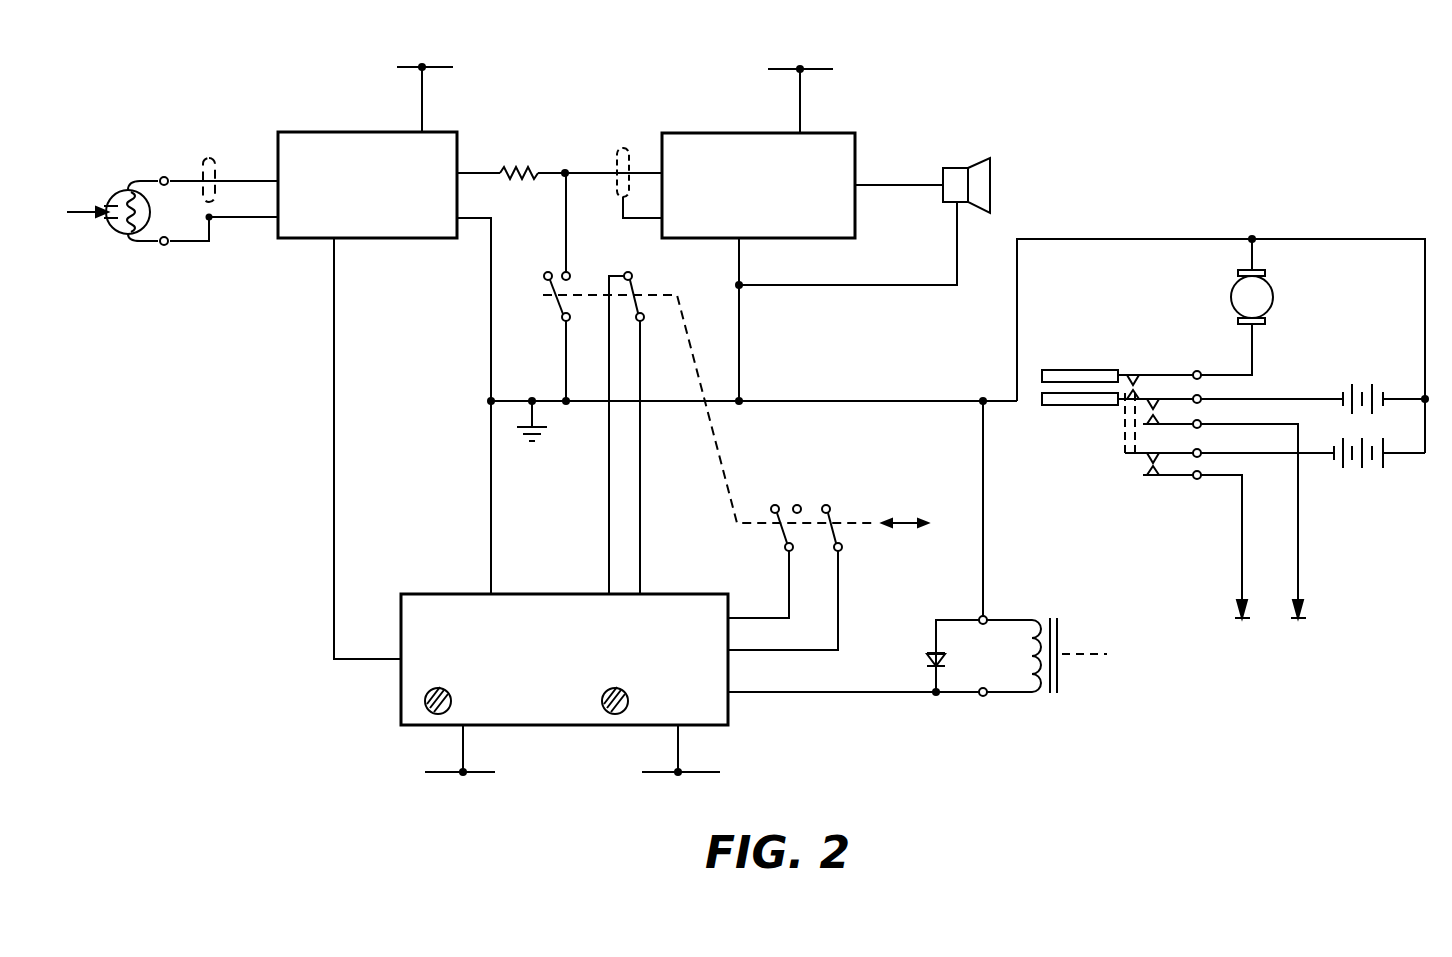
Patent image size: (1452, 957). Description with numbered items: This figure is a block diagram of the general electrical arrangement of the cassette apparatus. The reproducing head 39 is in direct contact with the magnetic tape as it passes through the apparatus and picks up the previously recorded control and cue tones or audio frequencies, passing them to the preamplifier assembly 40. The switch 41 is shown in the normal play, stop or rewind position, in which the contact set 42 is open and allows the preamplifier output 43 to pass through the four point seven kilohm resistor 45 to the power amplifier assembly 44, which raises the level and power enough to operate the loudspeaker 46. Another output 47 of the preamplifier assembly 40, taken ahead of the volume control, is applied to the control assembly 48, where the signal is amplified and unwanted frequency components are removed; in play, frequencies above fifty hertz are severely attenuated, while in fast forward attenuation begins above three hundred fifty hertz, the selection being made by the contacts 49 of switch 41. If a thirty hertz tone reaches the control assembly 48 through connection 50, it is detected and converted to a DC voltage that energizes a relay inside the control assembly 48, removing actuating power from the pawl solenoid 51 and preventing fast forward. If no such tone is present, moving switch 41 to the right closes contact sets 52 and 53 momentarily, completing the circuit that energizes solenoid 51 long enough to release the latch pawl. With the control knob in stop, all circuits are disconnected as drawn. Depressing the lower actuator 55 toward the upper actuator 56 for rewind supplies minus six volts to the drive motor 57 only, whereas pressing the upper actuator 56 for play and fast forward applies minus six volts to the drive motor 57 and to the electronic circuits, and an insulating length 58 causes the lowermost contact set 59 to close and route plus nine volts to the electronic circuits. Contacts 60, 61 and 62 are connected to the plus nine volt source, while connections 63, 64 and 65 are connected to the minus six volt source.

The reproducing head 39 is at (182, 232).
The preamplifier assembly 40 is at (416, 212).
The switch 41 is at (592, 270).
The contact set 42 is at (545, 270).
The preamplifier output 43 is at (470, 168).
The power amplifier assembly 44 is at (695, 145).
The resistor 45 is at (533, 172).
The loudspeaker 46 is at (955, 170).
The output 47 is at (467, 225).
The control assembly 48 is at (547, 705).
The contacts 49 is at (642, 284).
The connection 50 is at (362, 663).
The pawl solenoid 51 is at (1008, 680).
The contact set 52 is at (777, 503).
The contact set 53 is at (830, 504).
The lower actuator 55 is at (1070, 400).
The upper actuator 56 is at (1070, 372).
The drive motor 57 is at (1255, 298).
The insulating length 58 is at (1123, 436).
The lowermost contact set 59 is at (1150, 480).
The contact 60 is at (460, 776).
The contact 61 is at (432, 62).
The contact 62 is at (1244, 622).
The connection 63 is at (678, 776).
The connection 64 is at (812, 66).
The connection 65 is at (1300, 622).